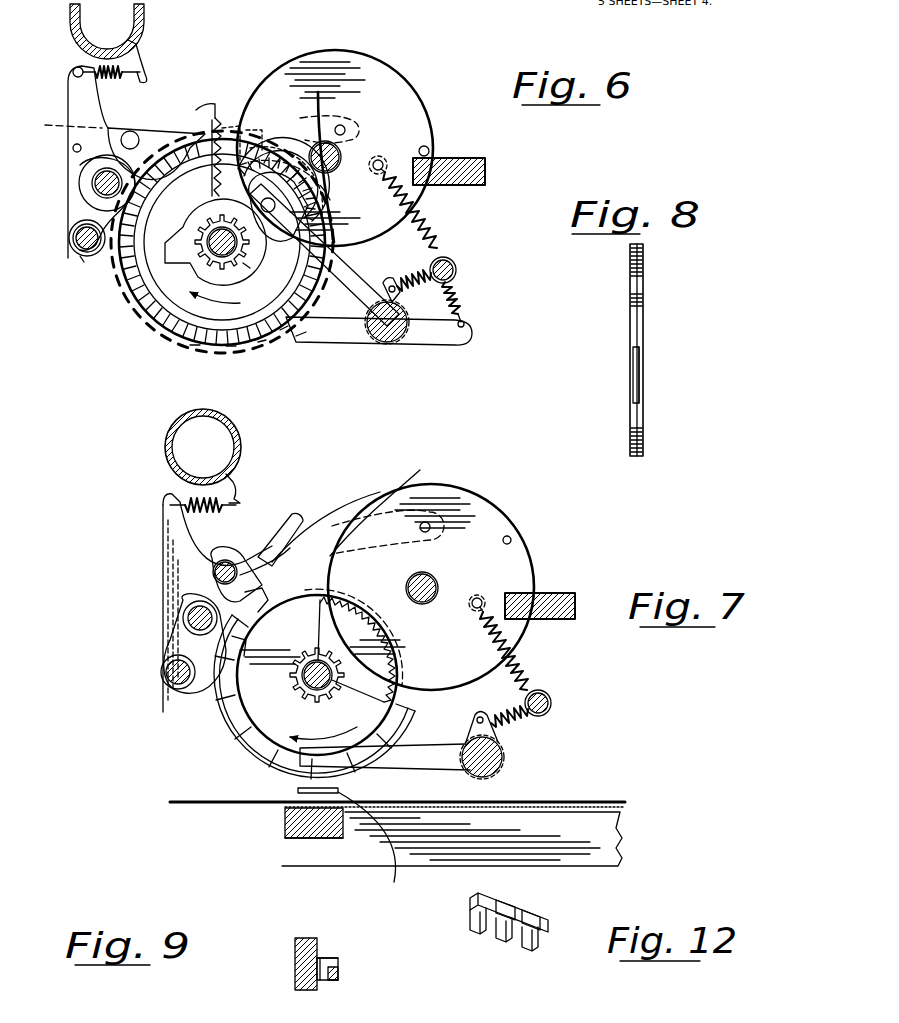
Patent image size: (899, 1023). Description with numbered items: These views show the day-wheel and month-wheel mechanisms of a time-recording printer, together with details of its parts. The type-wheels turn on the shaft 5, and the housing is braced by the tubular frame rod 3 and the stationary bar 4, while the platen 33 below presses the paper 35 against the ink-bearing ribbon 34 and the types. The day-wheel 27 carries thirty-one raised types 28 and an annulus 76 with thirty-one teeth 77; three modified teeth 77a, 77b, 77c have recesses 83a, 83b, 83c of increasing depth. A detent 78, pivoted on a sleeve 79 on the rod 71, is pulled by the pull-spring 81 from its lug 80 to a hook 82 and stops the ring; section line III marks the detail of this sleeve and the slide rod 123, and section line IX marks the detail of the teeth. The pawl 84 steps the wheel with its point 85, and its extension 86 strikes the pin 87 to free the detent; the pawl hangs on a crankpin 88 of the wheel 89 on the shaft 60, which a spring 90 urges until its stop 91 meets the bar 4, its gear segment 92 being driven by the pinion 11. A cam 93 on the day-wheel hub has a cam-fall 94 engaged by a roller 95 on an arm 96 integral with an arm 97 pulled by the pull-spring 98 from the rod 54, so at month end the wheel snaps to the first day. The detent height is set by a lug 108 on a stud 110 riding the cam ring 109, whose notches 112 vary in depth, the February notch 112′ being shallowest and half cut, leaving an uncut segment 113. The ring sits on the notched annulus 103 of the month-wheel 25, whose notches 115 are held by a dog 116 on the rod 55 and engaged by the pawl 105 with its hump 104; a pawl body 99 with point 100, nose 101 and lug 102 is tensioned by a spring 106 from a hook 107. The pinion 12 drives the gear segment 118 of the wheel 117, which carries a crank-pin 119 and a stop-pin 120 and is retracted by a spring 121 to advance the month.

In FIG. 6, the tubular frame rod 3 is at (70, 21).
In FIG. 7, the tubular frame rod 3 is at (165, 444).
In FIG. 6, the stationary bar 4 is at (485, 171).
In FIG. 7, the stationary bar 4 is at (575, 606).
In FIG. 6, the shaft 5 is at (207, 238).
In FIG. 7, the shaft 5 is at (328, 691).
In FIG. 6, the pinion 11 is at (243, 263).
In FIG. 7, the driving and releasing pinion 12 is at (302, 688).
In FIG. 7, the month-wheel 25 is at (237, 690).
In FIG. 6, the day-wheel 27 is at (152, 327).
In FIG. 9, the day-wheel 27 is at (295, 955).
In FIG. 6, the raised types 28 is at (197, 340).
In FIG. 7, the platen 33 is at (284, 828).
In FIG. 7, the ink-bearing ribbon 34 is at (452, 846).
In FIG. 7, the paper 35 is at (583, 802).
In FIG. 6, the rod 54 is at (456, 266).
In FIG. 7, the rod 54 is at (551, 703).
In FIG. 6, the rod 55 is at (392, 345).
In FIG. 7, the rod 55 is at (506, 756).
In FIG. 6, the shaft 60 is at (318, 92).
In FIG. 7, the shaft 60 is at (438, 585).
In FIG. 6, the rod 71 is at (80, 248).
In FIG. 7, the rod 71 is at (165, 674).
In FIG. 6, the annulus 76 is at (153, 282).
In FIG. 9, the annulus 76 is at (325, 958).
In FIG. 6, the teeth 77 is at (197, 340).
In FIG. 9, the teeth 77 is at (335, 980).
In FIG. 6, the modified tooth 77a is at (232, 340).
In FIG. 9, the modified tooth 77a is at (338, 978).
In FIG. 12, the modified tooth 77a is at (527, 942).
In FIG. 6, the modified tooth 77b is at (260, 336).
In FIG. 9, the modified tooth 77b is at (340, 970).
In FIG. 12, the modified tooth 77b is at (501, 940).
In FIG. 6, the modified tooth 77c is at (284, 326).
In FIG. 9, the modified tooth 77c is at (334, 960).
In FIG. 12, the modified tooth 77c is at (474, 928).
In FIG. 6, the detent 78 is at (163, 138).
In FIG. 6, the sleeve 79 is at (76, 238).
In FIG. 6, the lug 80 is at (68, 91).
In FIG. 6, the pull-spring 81 is at (78, 68).
In FIG. 6, the hook 82 is at (142, 54).
In FIG. 12, the recess 83a is at (473, 915).
In FIG. 12, the recess 83b is at (500, 900).
In FIG. 12, the recess 83c is at (560, 925).
In FIG. 6, the pawl 84 is at (210, 106).
In FIG. 6, the pawl point 85 is at (212, 126).
In FIG. 6, the extension 86 is at (59, 120).
In FIG. 6, the pin 87 is at (73, 149).
In FIG. 6, the crankpin 88 is at (348, 127).
In FIG. 6, the wheel 89 is at (390, 75).
In FIG. 6, the spring 90 is at (443, 225).
In FIG. 6, the stop 91 is at (430, 146).
In FIG. 6, the gear segment 92 is at (248, 160).
In FIG. 6, the cam 93 is at (165, 244).
In FIG. 6, the cam-fall 94 is at (158, 300).
In FIG. 6, the pin or roller 95 is at (276, 204).
In FIG. 6, the arm 96 is at (357, 278).
In FIG. 6, the arm 97 is at (440, 345).
In FIG. 6, the pull-spring 98 is at (462, 294).
In FIG. 7, the pawl body 99 is at (163, 592).
In FIG. 7, the pawl point 100 is at (250, 598).
In FIG. 7, the nose 101 is at (289, 515).
In FIG. 7, the lug 102 is at (172, 507).
In FIG. 7, the notched annulus 103 is at (232, 708).
In FIG. 7, the hump 104 is at (314, 517).
In FIG. 7, the pawl 105 is at (400, 475).
In FIG. 7, the spring 106 is at (205, 513).
In FIG. 7, the hook 107 is at (234, 481).
In FIG. 7, the lug 108 is at (260, 606).
In FIG. 8, the cam ring 109 is at (643, 429).
In FIG. 7, the cam ring 109 is at (225, 673).
In FIG. 6, the stud 110 is at (130, 132).
In FIG. 7, the stud 110 is at (218, 568).
In FIG. 8, the notches 112 is at (643, 305).
In FIG. 7, the notches 112 is at (249, 730).
In FIG. 8, the February notch 112′ is at (642, 388).
In FIG. 7, the February notch 112′ is at (232, 644).
In FIG. 8, the uncut segment 113 is at (633, 378).
In FIG. 7, the notches 115 is at (270, 796).
In FIG. 7, the spring-pressed dog 116 is at (398, 762).
In FIG. 7, the wheel 117 is at (470, 494).
In FIG. 7, the gear segment 118 is at (337, 606).
In FIG. 7, the crank-pin 119 is at (430, 527).
In FIG. 7, the stop-pin 120 is at (512, 540).
In FIG. 7, the spring 121 is at (523, 659).
In FIG. 6, the longitudinal rod 123 is at (98, 183).
In FIG. 7, the longitudinal rod 123 is at (188, 621).
In FIG. 6, the section line III is at (80, 258).
In FIG. 6, the section line IX is at (312, 344).